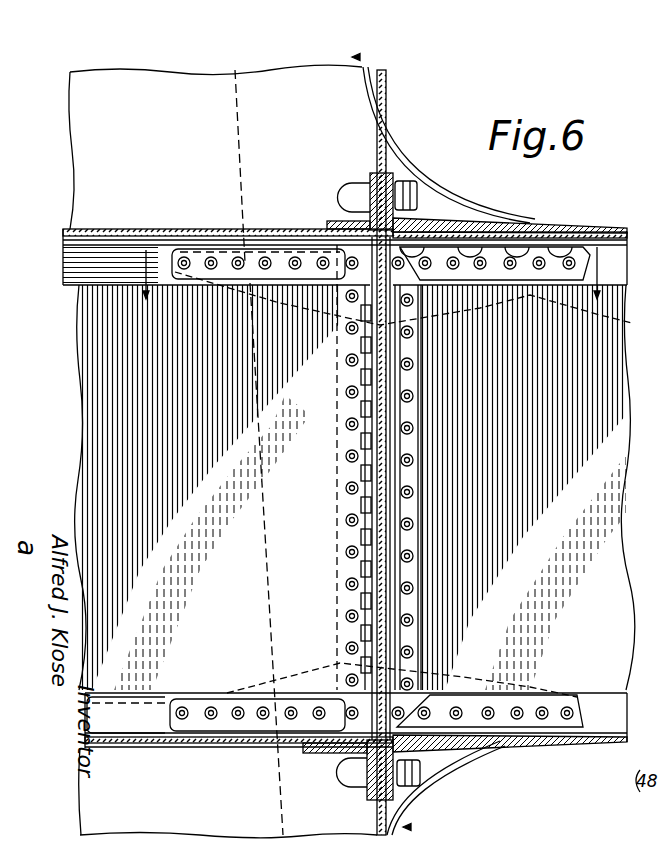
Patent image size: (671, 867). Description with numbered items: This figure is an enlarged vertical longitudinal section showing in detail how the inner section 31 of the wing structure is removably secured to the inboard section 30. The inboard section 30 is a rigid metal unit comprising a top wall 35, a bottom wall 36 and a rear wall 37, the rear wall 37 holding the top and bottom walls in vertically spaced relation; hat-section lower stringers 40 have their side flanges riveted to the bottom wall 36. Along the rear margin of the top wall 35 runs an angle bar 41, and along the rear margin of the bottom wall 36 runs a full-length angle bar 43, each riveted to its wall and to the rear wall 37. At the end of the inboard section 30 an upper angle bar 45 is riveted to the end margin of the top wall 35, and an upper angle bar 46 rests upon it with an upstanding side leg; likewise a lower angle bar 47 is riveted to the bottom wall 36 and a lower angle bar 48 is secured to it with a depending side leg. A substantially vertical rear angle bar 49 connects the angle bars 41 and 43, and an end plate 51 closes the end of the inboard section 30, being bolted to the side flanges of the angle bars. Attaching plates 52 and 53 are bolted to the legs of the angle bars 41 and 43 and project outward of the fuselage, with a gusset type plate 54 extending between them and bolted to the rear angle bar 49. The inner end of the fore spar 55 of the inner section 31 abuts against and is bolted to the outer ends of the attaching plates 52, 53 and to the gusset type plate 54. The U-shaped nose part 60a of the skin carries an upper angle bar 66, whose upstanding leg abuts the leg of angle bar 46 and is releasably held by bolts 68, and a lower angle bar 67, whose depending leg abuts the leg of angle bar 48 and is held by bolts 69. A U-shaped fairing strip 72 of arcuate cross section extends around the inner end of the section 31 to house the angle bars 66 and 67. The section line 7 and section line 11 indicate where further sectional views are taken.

The section line 7- 7 is at (353, 57).
The section line 11- 11 is at (368, 273).
The inboard section 30 is at (77, 464).
The inner section 31 is at (622, 565).
The top wall 35 is at (112, 232).
The bottom wall 36 is at (197, 742).
The rear wall 37 is at (86, 419).
The lower stringers 40 is at (118, 706).
The angle bar 41 is at (72, 266).
The angle bar 43 is at (197, 707).
The upper angle bar 45 is at (328, 230).
The upper angle bar 46 is at (334, 226).
The lower angle bar 47 is at (338, 754).
The lower angle bar 48 is at (367, 798).
The rear angle bar 49 is at (350, 438).
The end plate 51 is at (383, 537).
The attaching plate 52 is at (417, 303).
The attaching plate 53 is at (458, 678).
The gusset type plate 54 is at (425, 590).
The fore spar 55 is at (615, 301).
The nose part 60a is at (618, 229).
The upper angle bar 66 is at (473, 220).
The lower angle bar 67 is at (470, 753).
The bolts 68 is at (410, 184).
The bolts 69 is at (423, 782).
The fairing strip 72 is at (445, 201).